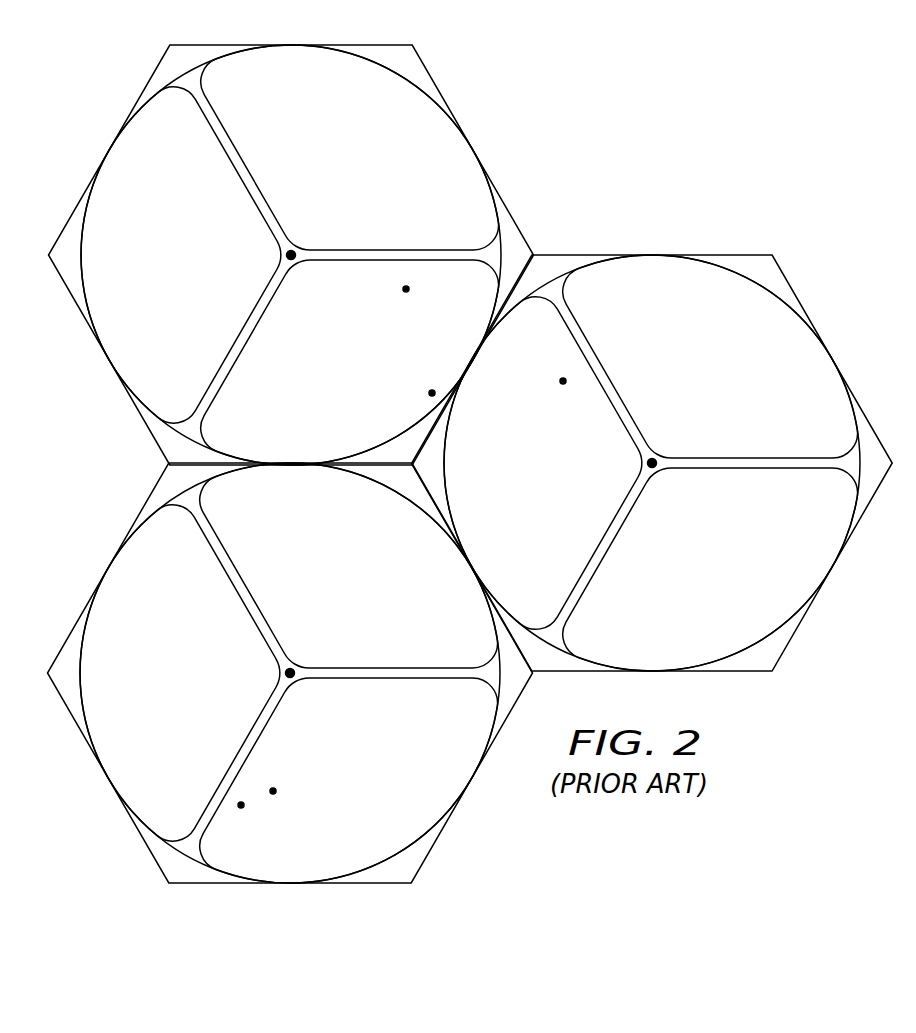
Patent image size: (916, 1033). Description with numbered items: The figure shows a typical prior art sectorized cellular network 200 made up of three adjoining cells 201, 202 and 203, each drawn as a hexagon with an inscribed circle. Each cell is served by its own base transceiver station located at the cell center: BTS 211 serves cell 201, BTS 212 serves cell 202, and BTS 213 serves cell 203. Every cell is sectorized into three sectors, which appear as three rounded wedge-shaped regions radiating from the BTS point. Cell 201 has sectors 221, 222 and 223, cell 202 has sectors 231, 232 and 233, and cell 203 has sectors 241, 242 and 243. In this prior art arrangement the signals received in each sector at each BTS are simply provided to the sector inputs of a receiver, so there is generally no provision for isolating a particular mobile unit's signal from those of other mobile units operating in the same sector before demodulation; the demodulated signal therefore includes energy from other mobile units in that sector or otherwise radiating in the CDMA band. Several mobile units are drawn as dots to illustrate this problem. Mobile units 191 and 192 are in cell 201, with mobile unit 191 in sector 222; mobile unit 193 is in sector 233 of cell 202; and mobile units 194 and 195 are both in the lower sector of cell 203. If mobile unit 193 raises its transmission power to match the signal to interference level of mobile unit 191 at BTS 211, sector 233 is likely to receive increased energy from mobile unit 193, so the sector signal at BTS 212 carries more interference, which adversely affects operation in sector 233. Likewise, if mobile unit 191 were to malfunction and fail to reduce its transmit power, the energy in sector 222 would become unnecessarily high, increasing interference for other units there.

The network 200 is at (610, 142).
The cell 201 is at (124, 122).
The cell 202 is at (690, 254).
The cell 203 is at (122, 803).
The BTS 211 is at (296, 250).
The BTS 212 is at (656, 459).
The BTS 213 is at (295, 668).
The sector 221 is at (387, 130).
The sector 222 is at (387, 408).
The sector 223 is at (149, 268).
The sector 231 is at (751, 338).
The sector 232 is at (751, 615).
The sector 233 is at (509, 477).
The sector 241 is at (387, 545).
The sector 242 is at (387, 825).
The sector 243 is at (149, 686).
The mobile unit 191 is at (403, 290).
The mobile unit 192 is at (431, 390).
The mobile unit 193 is at (560, 383).
The mobile unit 194 is at (274, 788).
The mobile unit 195 is at (242, 809).